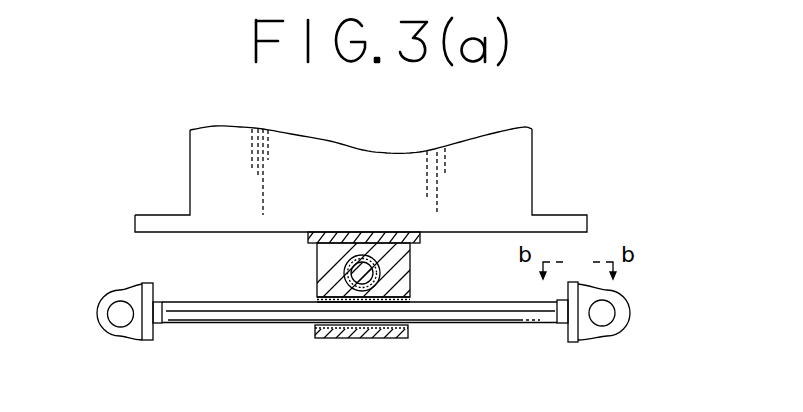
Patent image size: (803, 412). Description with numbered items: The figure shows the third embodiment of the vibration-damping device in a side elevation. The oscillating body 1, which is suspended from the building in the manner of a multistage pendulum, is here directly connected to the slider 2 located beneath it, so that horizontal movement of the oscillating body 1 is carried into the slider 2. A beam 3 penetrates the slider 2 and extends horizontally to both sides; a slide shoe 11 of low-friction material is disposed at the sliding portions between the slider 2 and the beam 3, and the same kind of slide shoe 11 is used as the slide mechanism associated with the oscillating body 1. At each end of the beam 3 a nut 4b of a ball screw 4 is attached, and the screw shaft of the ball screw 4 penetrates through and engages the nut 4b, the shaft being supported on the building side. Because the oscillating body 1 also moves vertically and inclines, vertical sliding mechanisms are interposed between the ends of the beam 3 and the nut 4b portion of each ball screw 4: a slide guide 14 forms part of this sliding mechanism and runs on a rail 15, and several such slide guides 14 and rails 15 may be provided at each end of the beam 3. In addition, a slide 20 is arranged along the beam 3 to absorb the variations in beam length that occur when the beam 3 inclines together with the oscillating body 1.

The oscillating body 1 is at (522, 169).
The slider 2 is at (397, 257).
The beam 3 is at (362, 273).
The ball screw 4 is at (112, 313).
The nut 4b is at (123, 292).
The slide shoe 11 is at (317, 258).
The slide guide 14 is at (173, 323).
The rail 15 is at (152, 343).
The slide 20 is at (525, 327).